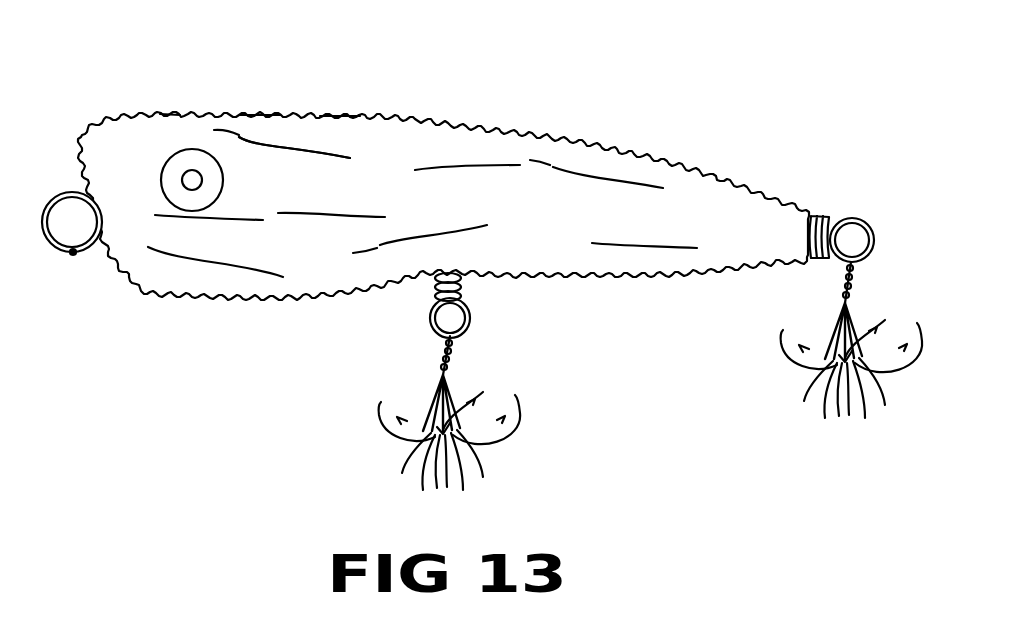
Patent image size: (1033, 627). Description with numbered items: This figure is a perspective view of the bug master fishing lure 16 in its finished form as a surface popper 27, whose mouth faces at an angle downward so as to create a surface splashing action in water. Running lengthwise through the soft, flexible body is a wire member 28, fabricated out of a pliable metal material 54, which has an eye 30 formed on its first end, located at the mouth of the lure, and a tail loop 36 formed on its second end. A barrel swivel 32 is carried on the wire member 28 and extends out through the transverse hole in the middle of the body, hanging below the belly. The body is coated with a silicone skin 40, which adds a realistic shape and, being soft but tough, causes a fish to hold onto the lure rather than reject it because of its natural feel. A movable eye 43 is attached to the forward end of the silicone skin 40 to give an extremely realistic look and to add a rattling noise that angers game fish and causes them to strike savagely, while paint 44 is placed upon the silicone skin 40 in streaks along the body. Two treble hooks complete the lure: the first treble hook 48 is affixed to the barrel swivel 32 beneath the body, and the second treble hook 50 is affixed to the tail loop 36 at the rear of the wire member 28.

The bug master fishing lure 16 is at (532, 103).
The surface popper 27 is at (383, 117).
The wire member 28 is at (824, 213).
The eye 30 is at (70, 192).
The barrel swivel 32 is at (432, 289).
The tail loop 36 is at (855, 215).
The silicone skin 40 is at (612, 157).
The movable eyes 43 is at (187, 158).
The paint 44 is at (261, 140).
The first treble hook 48 is at (385, 428).
The second treble hook 50 is at (780, 346).
The pliable metal material 54 is at (73, 254).